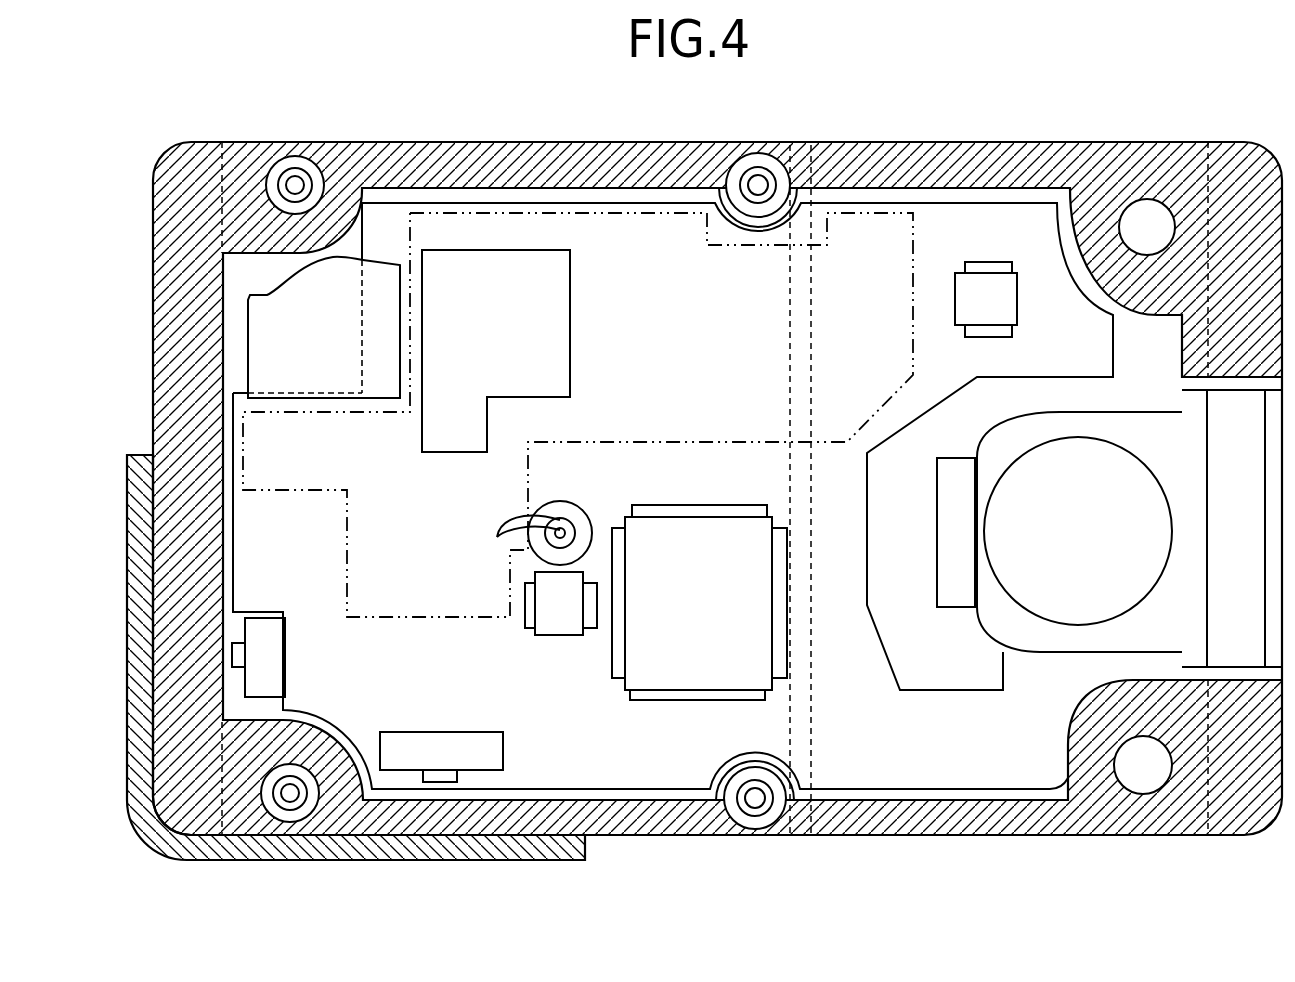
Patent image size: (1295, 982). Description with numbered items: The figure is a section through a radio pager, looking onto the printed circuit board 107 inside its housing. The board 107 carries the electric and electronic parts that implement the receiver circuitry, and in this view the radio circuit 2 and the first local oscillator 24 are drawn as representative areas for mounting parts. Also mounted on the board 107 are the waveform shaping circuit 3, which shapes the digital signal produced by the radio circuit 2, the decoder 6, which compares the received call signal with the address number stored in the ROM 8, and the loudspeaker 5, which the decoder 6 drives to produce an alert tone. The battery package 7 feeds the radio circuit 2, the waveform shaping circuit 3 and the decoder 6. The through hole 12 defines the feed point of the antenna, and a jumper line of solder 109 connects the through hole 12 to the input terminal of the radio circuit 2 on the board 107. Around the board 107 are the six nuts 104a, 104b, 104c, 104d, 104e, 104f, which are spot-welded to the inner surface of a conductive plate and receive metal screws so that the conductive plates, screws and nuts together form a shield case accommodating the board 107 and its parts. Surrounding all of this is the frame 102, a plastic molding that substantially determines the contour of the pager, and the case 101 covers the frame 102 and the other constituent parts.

The radio circuit 2 is at (574, 212).
The waveform shaping circuit 3 is at (978, 262).
The loudspeaker 5 is at (248, 298).
The decoder 6 is at (655, 703).
The battery package 7 is at (1033, 648).
The ROM 8 is at (540, 648).
The through hole 12 is at (573, 513).
The first local oscillator 24 is at (572, 270).
The case 101 is at (183, 858).
The frame 102 is at (221, 143).
The nut 104a is at (293, 156).
The nut 104b is at (765, 154).
The nut 104c is at (310, 813).
The nut 104d is at (748, 836).
The nut 104e is at (1175, 205).
The nut 104f is at (1133, 788).
The printed circuit board 107 is at (533, 772).
The solder 109 is at (498, 532).